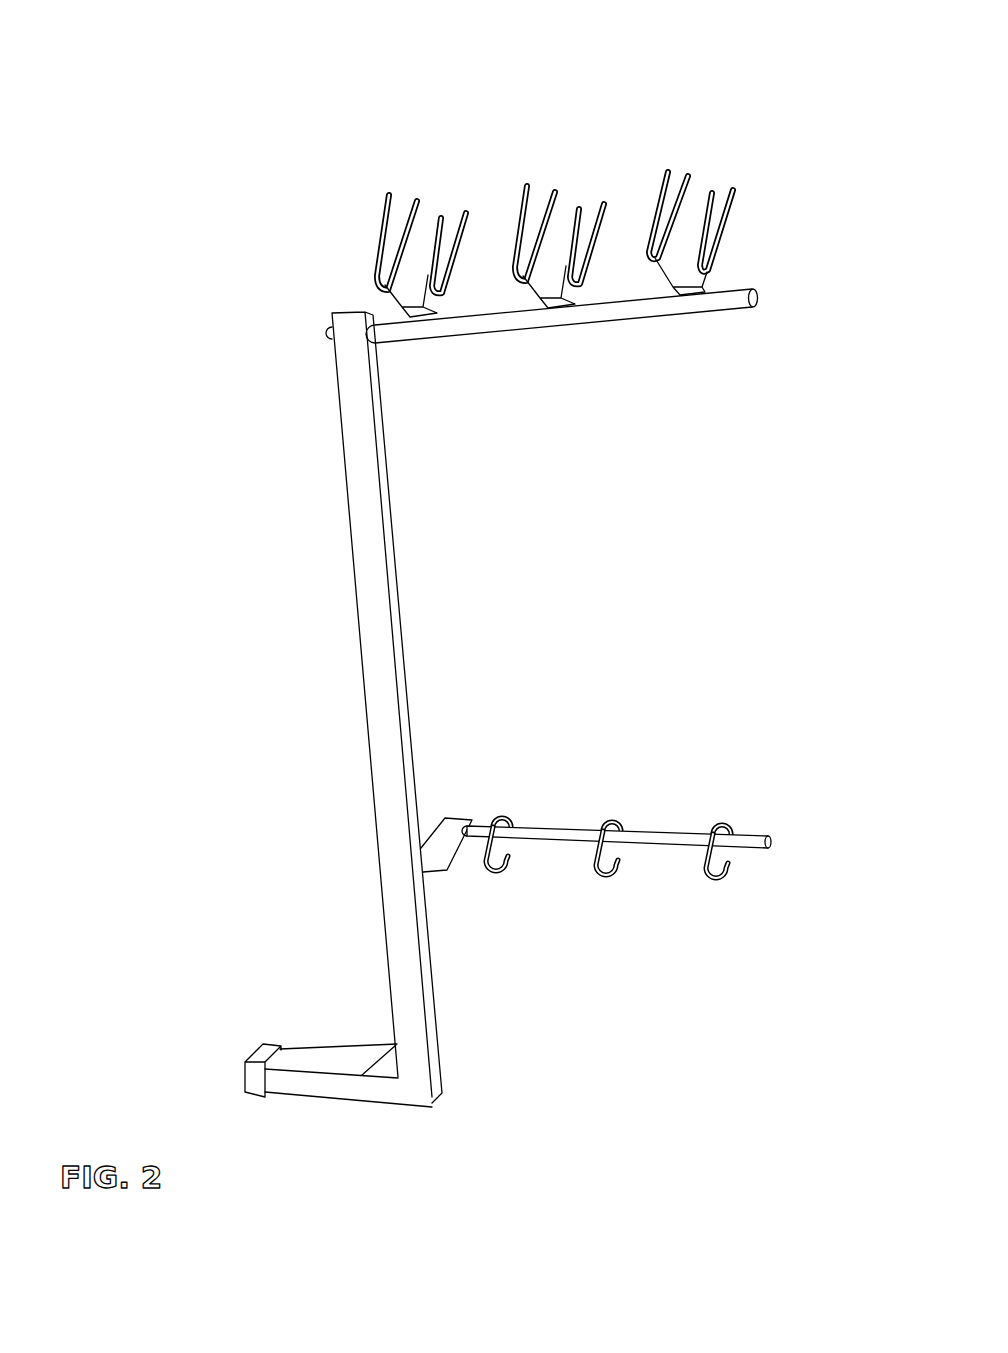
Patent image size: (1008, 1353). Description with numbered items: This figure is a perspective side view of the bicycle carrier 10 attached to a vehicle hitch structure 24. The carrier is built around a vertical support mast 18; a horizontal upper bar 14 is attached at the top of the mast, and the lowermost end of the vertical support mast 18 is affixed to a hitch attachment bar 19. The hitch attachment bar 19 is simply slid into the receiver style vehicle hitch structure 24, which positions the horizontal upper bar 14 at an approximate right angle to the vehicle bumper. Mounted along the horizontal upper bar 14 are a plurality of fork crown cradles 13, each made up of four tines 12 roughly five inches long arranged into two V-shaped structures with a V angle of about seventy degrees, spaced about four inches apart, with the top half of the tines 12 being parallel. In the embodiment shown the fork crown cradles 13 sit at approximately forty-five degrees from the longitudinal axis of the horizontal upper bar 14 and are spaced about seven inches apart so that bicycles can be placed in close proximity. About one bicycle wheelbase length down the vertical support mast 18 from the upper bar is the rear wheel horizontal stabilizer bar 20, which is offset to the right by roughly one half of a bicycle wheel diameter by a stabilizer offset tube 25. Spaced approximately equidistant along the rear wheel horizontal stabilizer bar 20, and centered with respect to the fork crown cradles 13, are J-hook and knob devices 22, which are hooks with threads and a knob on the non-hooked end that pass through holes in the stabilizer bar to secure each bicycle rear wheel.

The bicycle carrier 10 is at (521, 599).
The tines 12 is at (466, 212).
The fork crown cradle 13 is at (763, 226).
The horizontal upper bar 14 is at (625, 312).
The vertical support mast 18 is at (370, 528).
The hitch attachment bar 19 is at (333, 1085).
The rear wheel horizontal stabilizer bar 20 is at (654, 840).
The J-hook and knob 22 is at (616, 805).
The vehicle hitch structure 24 is at (255, 1047).
The stabilizer offset tube 25 is at (433, 870).